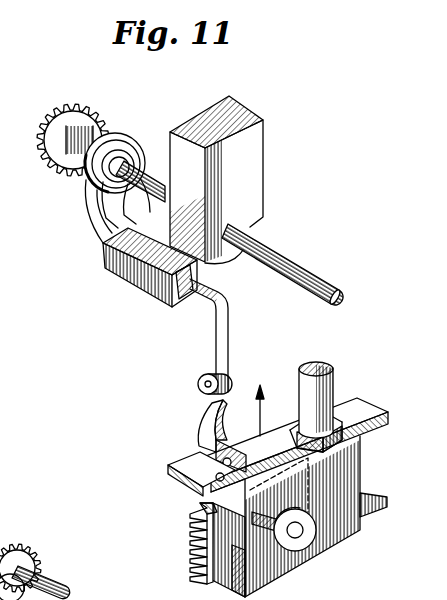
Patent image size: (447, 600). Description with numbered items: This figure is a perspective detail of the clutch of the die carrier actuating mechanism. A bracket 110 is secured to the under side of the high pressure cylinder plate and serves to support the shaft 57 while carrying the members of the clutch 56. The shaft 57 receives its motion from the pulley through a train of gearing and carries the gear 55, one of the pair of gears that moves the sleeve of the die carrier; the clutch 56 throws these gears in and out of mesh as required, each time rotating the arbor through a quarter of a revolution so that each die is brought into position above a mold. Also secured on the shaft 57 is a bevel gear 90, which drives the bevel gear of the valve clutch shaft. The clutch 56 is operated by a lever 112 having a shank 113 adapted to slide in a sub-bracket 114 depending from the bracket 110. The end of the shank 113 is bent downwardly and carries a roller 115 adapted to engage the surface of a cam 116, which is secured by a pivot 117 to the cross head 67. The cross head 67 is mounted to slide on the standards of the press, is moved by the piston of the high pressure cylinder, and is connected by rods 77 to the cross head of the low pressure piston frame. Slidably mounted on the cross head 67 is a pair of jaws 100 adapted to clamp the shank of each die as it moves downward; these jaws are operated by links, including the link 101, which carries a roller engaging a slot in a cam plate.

The gear 55 is at (58, 118).
The clutch 56 is at (119, 146).
The shaft 57 is at (288, 258).
The cross head 67 is at (284, 497).
The rods 77 is at (315, 389).
The bevel gear 90 is at (20, 560).
The jaws 100 is at (196, 541).
The link 101 is at (302, 546).
The bracket 110 is at (216, 180).
The lever 112 is at (100, 219).
The shank 113 is at (208, 309).
The sub-bracket 114 is at (146, 280).
The roller 115 is at (198, 386).
The cam 116 is at (199, 435).
The pivot 117 is at (207, 452).